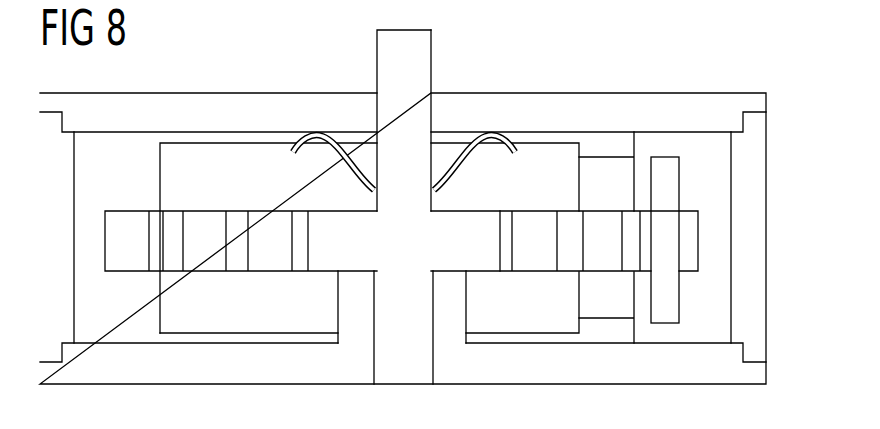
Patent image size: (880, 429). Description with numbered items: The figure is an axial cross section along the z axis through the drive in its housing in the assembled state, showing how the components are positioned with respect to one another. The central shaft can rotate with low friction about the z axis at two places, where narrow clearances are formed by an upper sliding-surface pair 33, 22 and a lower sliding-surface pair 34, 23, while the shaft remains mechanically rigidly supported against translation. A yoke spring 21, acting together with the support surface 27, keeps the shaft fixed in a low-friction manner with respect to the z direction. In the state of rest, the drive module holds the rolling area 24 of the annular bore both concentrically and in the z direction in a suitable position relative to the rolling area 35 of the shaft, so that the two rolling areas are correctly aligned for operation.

The yoke spring 21 is at (337, 163).
The sliding surface 22 is at (435, 105).
The sliding surface 23 is at (438, 345).
The rolling area 24 is at (516, 234).
The support surface 27 is at (356, 274).
The sliding surface 33 is at (429, 111).
The sliding surface 34 is at (430, 352).
The rolling area 35 is at (497, 245).